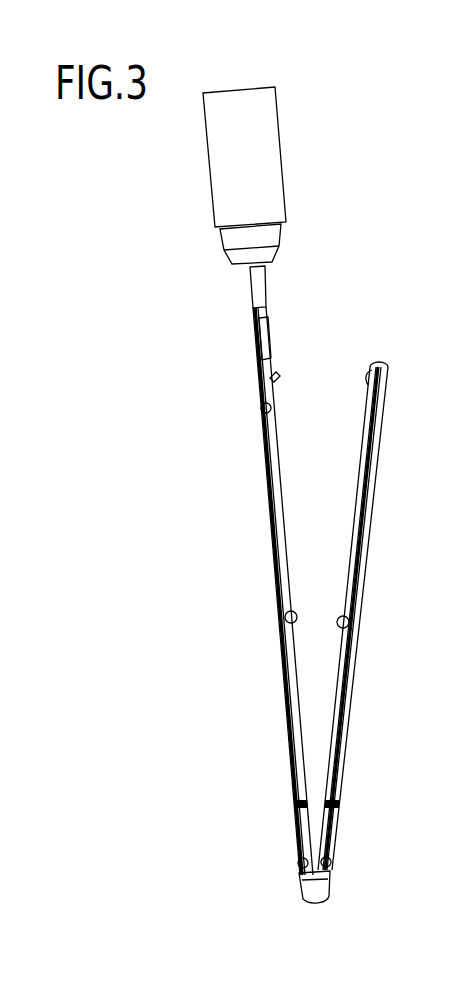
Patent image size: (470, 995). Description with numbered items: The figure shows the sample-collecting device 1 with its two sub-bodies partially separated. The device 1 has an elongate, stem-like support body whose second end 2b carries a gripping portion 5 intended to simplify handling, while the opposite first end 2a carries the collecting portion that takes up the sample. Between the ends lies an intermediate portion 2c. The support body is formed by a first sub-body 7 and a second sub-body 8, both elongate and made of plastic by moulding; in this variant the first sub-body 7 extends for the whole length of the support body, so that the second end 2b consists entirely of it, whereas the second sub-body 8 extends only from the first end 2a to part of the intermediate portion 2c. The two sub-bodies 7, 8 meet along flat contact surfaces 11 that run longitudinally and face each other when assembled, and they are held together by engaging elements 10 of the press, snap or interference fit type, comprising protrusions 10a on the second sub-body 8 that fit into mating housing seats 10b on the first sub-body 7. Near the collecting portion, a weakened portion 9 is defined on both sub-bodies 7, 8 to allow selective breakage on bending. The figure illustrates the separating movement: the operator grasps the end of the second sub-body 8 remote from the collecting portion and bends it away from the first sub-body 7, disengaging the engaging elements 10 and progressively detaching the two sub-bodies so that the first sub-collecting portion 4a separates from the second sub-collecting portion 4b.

The device 1 is at (388, 244).
The gripping portion 5 is at (245, 141).
The second end 2b is at (253, 282).
The first sub-body 7 is at (258, 520).
The second sub-body 8 is at (380, 518).
The intermediate portion 2c is at (270, 572).
The engaging elements 10 is at (358, 378).
The protrusions 10a is at (372, 368).
The housing seats 10b is at (262, 412).
The contact surfaces 11 is at (360, 464).
The weakened portion 9 is at (292, 802).
The first end 2a is at (330, 868).
The first sub-collecting portion 4a is at (300, 887).
The second sub-collecting portion 4b is at (316, 897).